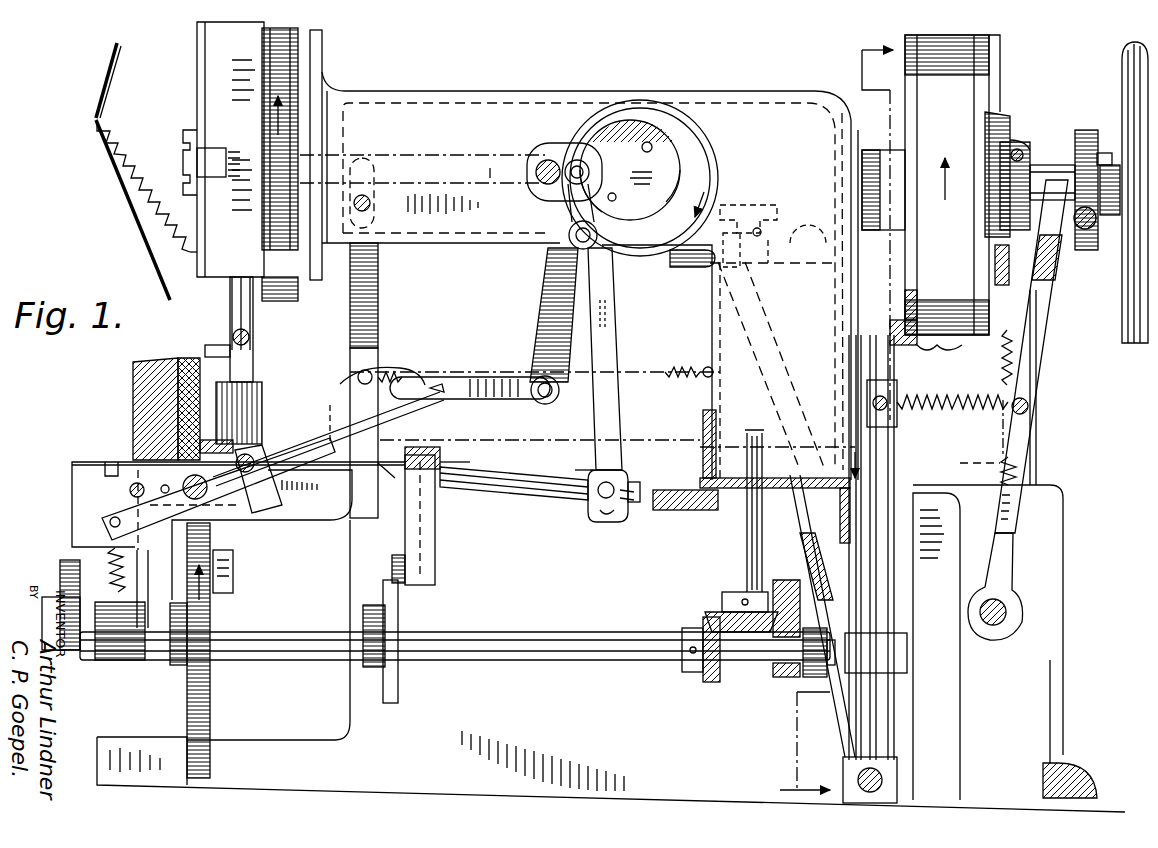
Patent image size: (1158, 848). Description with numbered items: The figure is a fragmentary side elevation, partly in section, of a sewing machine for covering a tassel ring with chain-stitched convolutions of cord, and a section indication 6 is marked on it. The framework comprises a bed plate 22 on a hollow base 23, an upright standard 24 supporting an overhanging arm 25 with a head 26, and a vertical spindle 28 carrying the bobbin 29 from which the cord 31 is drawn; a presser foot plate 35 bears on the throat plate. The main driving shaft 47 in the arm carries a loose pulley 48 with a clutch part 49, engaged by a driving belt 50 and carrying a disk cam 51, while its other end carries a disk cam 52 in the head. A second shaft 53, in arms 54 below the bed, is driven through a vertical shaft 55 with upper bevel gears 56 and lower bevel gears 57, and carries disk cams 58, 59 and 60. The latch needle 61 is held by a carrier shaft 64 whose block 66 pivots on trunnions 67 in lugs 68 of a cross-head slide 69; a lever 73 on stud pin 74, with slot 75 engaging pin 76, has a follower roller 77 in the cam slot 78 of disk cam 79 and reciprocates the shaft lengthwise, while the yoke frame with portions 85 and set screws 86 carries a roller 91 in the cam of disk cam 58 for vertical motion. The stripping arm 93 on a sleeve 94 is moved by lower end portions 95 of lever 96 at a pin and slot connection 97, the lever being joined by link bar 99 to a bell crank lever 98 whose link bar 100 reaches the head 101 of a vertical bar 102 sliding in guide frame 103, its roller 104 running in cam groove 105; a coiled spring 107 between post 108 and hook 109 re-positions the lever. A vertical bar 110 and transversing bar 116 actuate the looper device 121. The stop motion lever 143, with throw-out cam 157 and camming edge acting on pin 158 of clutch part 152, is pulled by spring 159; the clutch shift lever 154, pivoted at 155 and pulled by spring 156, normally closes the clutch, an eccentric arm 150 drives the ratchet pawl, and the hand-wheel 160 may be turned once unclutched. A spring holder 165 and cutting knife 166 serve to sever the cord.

The bed plate 22 is at (110, 462).
The hollow base 23 is at (1062, 690).
The upright standard 24 is at (789, 305).
The overhanging arm 25 is at (463, 120).
The head 26 is at (218, 72).
The vertical spindle 28 is at (178, 360).
The bobbin 29 is at (130, 393).
The fabric cord 31 is at (150, 268).
The presser foot plate 35 is at (248, 436).
The main driving shaft 47 is at (497, 165).
The loose pulley 48 is at (990, 60).
The clutch part 49 is at (998, 112).
The driving belt 50 is at (947, 185).
The disk cam 51 is at (906, 68).
The disk cam 52 is at (290, 80).
The second shaft 53 is at (562, 636).
The arms 54 is at (758, 562).
The vertically disposed shaft 55 is at (748, 578).
The upper bevel gears 56 is at (795, 183).
The lower bevel gears 57 is at (720, 668).
The disk cam 58 is at (398, 690).
The disk cam 59 is at (196, 686).
The disk cam 60 is at (72, 565).
The latch needle 61 is at (328, 439).
The carrier shaft 64 is at (555, 487).
The supporting block 66 is at (592, 462).
The trunnions 67 is at (614, 522).
The lugs 68 is at (634, 482).
The cross-head slide 69 is at (680, 510).
The lever 73 is at (606, 356).
The stud pin 74 is at (572, 244).
The elongated slot 75 is at (622, 474).
The pin 76 is at (600, 516).
The follower roller 77 is at (552, 143).
The cam slot 78 is at (655, 130).
The disk cam 79 is at (632, 110).
The laterally extending portions 85 is at (490, 466).
The set screws 86 is at (442, 452).
The roller 91 is at (420, 582).
The arm 93 is at (332, 410).
The sleeve 94 is at (352, 480).
The lower end portions 95 is at (392, 480).
The lever 96 is at (378, 292).
The slot screw 97 is at (372, 200).
The bell crank lever 98 is at (545, 332).
The link bar 99 is at (535, 406).
The link bar 100 is at (770, 425).
The head 101 is at (898, 780).
The vertical bar 102 is at (878, 602).
The vertical guide frame 103 is at (903, 570).
The roller 104 is at (918, 300).
The cam groove 105 is at (918, 330).
The coiled spring 107 is at (470, 377).
The post 108 is at (366, 370).
The hook 109 is at (703, 378).
The vertical bar 110 is at (253, 318).
The horizontal transversing bar 116 is at (213, 158).
The looper device 121 is at (236, 432).
The lever 143 is at (1032, 300).
The eccentric arm 150 is at (1076, 232).
The clutch part 152 is at (1018, 145).
The clutch shift lever 154 is at (1012, 368).
The pivot 155 is at (1002, 600).
The pull spring 156 is at (962, 420).
The throw-out cam 157 is at (1012, 138).
The pin 158 is at (1023, 150).
The pull spring 159 is at (1033, 436).
The hand-wheel 160 is at (1122, 322).
The spring holder 165 is at (440, 392).
The cutting knife 166 is at (232, 492).
The section line 6 is at (829, 416).